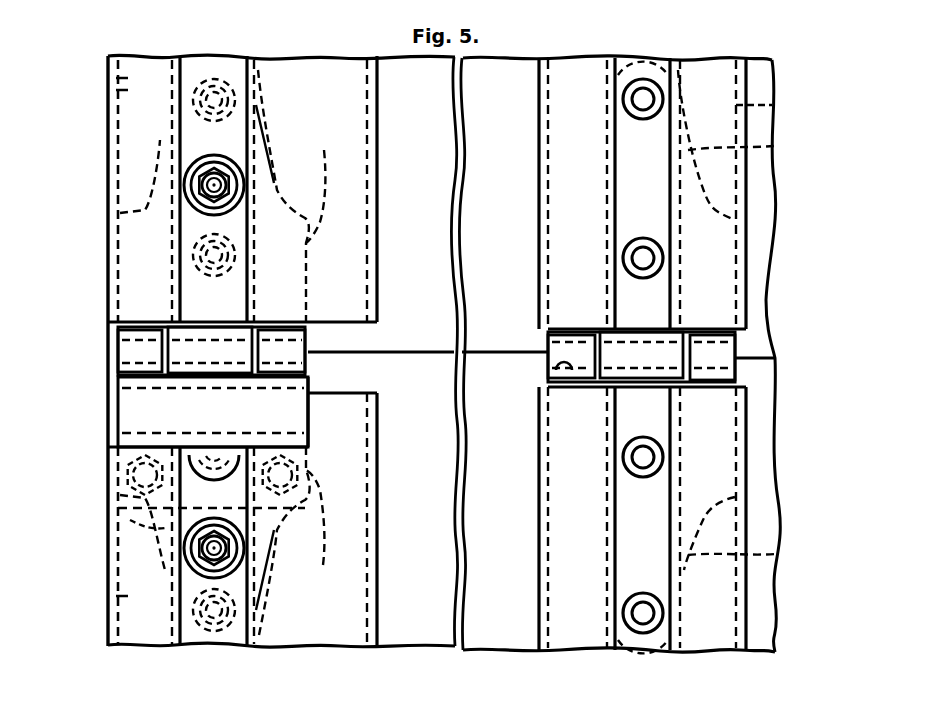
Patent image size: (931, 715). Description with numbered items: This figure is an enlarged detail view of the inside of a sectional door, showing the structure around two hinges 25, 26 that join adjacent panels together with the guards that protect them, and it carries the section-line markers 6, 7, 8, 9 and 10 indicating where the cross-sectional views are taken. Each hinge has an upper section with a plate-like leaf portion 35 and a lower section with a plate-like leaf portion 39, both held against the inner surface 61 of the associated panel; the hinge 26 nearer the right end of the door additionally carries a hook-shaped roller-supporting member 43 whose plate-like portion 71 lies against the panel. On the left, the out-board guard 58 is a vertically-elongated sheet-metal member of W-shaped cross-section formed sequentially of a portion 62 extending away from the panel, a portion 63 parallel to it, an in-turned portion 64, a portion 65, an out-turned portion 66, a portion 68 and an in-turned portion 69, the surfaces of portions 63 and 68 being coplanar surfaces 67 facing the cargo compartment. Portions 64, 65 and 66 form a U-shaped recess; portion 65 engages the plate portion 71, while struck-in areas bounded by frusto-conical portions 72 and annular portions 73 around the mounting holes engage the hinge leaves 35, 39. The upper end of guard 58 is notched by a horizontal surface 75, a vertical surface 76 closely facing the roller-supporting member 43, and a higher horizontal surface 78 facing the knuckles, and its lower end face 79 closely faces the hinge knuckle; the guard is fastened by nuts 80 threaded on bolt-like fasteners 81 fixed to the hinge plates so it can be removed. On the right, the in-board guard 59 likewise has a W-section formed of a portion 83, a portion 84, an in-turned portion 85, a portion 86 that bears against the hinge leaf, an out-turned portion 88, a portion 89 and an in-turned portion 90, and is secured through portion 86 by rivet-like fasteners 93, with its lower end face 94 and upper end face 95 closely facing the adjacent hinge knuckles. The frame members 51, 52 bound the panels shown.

The hinge 25 is at (760, 336).
The hinge 26 is at (96, 334).
The plate-like leaf portion 35 is at (791, 143).
The plate-like leaf portion 39 is at (780, 556).
The hook-shaped roller-supporting member 43 is at (96, 396).
The frame member 51 is at (393, 44).
The frame member 52 is at (400, 655).
The out-board guard 58 is at (98, 64).
The in-board guard 59 is at (526, 130).
The inner surface 61 is at (424, 93).
The portion 62 is at (118, 116).
The portion 63 is at (128, 84).
The in-turned portion 64 is at (172, 68).
The portion 65 is at (190, 55).
The out-turned portion 66 is at (262, 76).
The coplanar surfaces 67 is at (158, 111).
The portion 68 is at (338, 56).
The in-turned portion 69 is at (371, 126).
The plate-like portion 71 is at (100, 538).
The frusto-conical portion 72 is at (182, 136).
The annular portion 73 is at (180, 222).
The transversely-extending horizontal surface 75 is at (160, 440).
The leftwardly-facing longitudinally-extending vertical surface 76 is at (305, 414).
The transversely-extending horizontal surface 78 is at (336, 390).
The lower end face 79 is at (330, 336).
The nut 80 is at (182, 168).
The bolt-like fastener 81 is at (238, 185).
The portion 83 is at (548, 153).
The portion 84 is at (570, 56).
The in-turned portion 85 is at (612, 154).
The portion 86 is at (668, 58).
The out-turned portion 88 is at (684, 192).
The portion 89 is at (716, 64).
The in-turned portion 90 is at (772, 100).
The rivet-like fastener 93 is at (620, 118).
The lower end face 94 is at (548, 336).
The upper end face 95 is at (548, 368).
The section line 6 is at (607, 18).
The section line 7 is at (62, 250).
The section line 8 is at (62, 504).
The section line 9 is at (182, 18).
The section line 10 is at (505, 288).